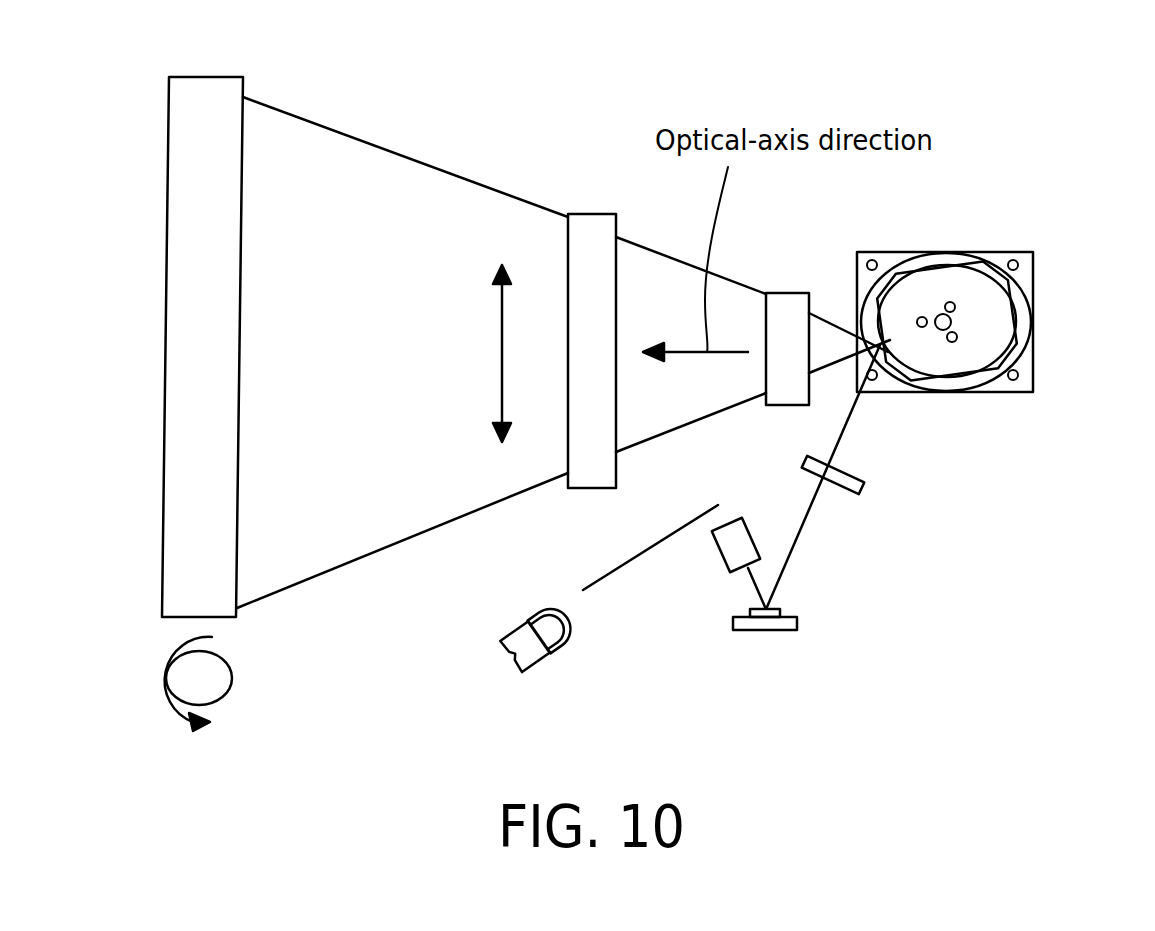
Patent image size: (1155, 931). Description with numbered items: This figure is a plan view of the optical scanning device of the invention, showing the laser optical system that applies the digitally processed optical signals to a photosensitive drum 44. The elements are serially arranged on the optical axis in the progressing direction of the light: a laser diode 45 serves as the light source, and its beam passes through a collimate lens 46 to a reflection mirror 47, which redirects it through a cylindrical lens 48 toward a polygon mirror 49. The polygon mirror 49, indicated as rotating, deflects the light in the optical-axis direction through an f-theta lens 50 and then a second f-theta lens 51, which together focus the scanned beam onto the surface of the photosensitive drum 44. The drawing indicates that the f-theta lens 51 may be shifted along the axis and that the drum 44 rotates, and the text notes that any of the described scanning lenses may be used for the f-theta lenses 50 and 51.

The photosensitive drum 44 is at (181, 128).
The laser diode 45 is at (558, 655).
The collimate lens 46 is at (720, 560).
The reflection mirror 47 is at (808, 633).
The cylindrical lens 48 is at (863, 485).
The polygon mirror 49 is at (1022, 287).
The f-theta lens 50 is at (793, 293).
The f-theta lens 51 is at (585, 214).